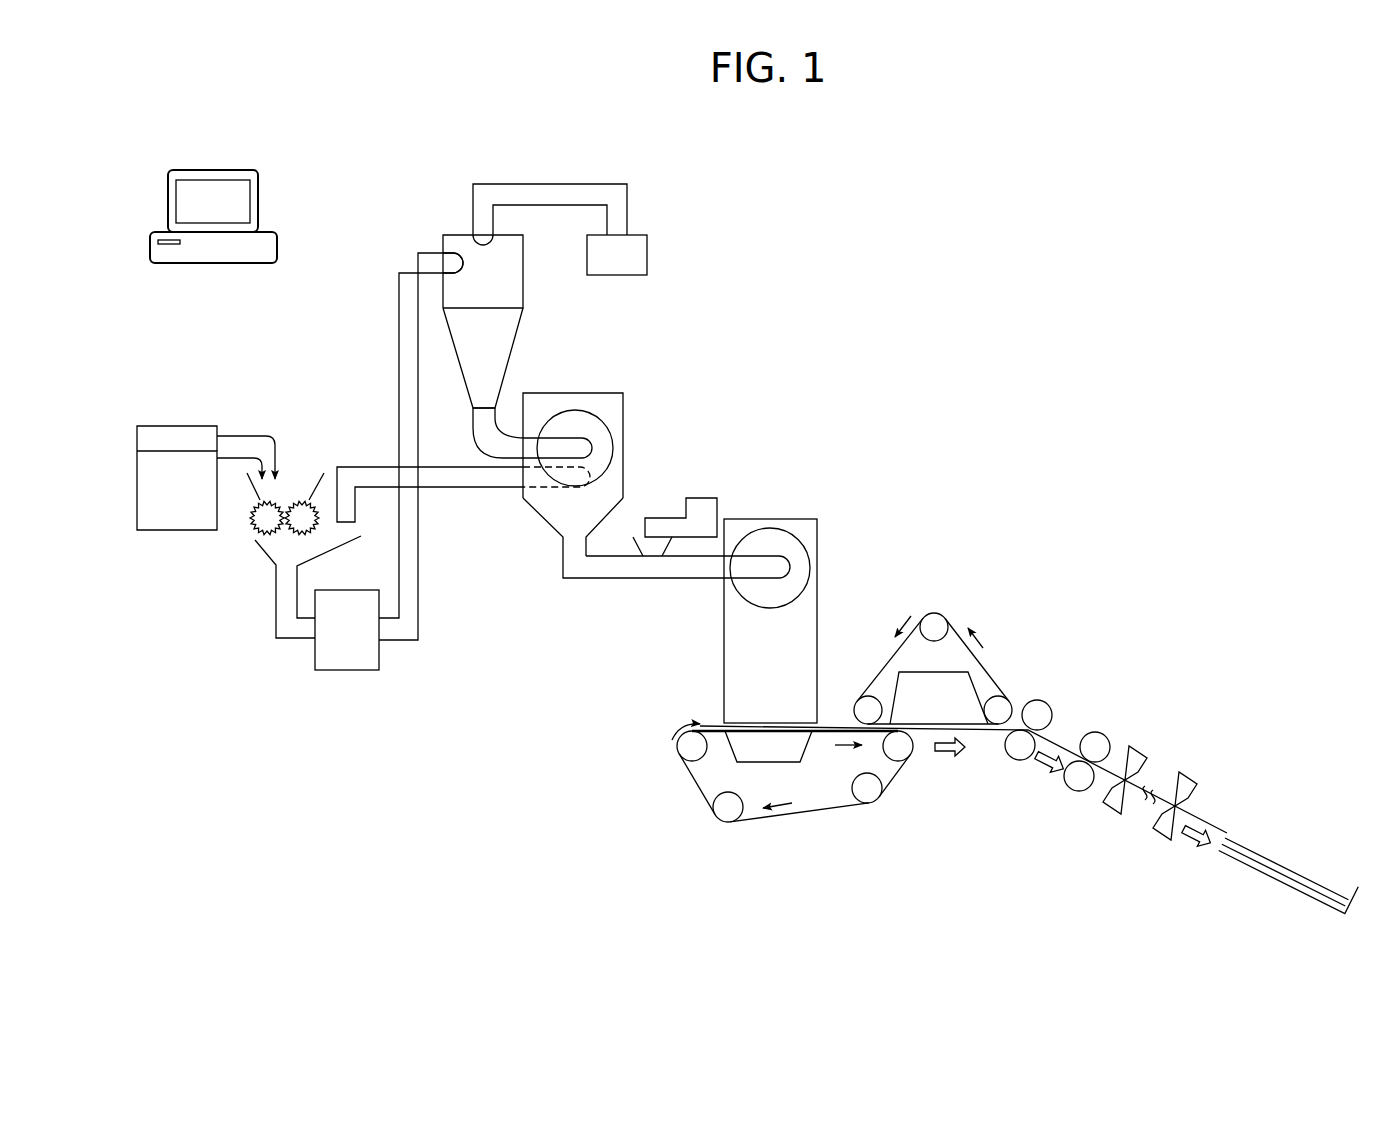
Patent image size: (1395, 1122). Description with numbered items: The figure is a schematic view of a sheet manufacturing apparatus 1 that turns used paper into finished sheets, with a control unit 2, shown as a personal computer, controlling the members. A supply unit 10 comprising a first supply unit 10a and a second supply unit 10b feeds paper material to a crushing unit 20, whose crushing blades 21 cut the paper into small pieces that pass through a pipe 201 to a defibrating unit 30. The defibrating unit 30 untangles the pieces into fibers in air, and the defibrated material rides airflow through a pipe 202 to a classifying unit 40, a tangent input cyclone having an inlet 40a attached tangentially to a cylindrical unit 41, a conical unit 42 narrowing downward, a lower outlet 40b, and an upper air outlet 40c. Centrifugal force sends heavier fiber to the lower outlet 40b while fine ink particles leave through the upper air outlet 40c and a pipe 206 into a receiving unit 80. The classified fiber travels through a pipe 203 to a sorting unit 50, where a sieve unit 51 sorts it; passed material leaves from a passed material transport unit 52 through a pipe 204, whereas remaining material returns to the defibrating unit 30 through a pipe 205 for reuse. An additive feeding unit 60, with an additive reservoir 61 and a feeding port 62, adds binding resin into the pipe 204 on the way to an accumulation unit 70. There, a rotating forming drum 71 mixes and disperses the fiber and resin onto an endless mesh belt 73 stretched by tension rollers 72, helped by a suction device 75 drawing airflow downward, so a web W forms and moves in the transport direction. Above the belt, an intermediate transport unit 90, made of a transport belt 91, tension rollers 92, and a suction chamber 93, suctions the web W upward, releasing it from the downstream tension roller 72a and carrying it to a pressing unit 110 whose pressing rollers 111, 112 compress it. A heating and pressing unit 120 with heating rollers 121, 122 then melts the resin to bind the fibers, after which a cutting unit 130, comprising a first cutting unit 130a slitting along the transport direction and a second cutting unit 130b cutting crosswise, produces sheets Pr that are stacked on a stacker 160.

The sheet manufacturing apparatus 1 is at (843, 209).
The control unit 2 is at (271, 171).
The supply unit 10 is at (206, 466).
The first supply unit 10a is at (176, 541).
The second supply unit 10b is at (207, 427).
The crushing unit 20 is at (276, 541).
The crushing blades 21 is at (263, 533).
The defibrating unit 30 is at (355, 588).
The classifying unit 40 is at (490, 296).
The inlet 40a is at (444, 263).
The lower outlet 40b is at (490, 410).
The upper air outlet 40c is at (477, 240).
The cylindrical unit 41 is at (517, 281).
The conical unit 42 is at (467, 386).
The sorting unit 50 is at (563, 473).
The sieve unit 51 is at (589, 413).
The passed material transport unit 52 is at (554, 523).
The additive feeding unit 60 is at (675, 488).
The additive reservoir 61 is at (703, 499).
The feeding port 62 is at (640, 538).
The accumulation unit 70 is at (793, 590).
The forming drum 71 is at (768, 547).
The tension rollers 72 is at (771, 803).
The tension roller 72a is at (883, 748).
The mesh belt 73 is at (771, 806).
The suction device 75 is at (747, 756).
The receiving unit 80 is at (657, 222).
The intermediate transport unit 90 is at (948, 640).
The transport belt 91 is at (984, 661).
The tension rollers 92 is at (927, 613).
The suction chamber 93 is at (900, 674).
The pressing unit 110 is at (1044, 701).
The pressing roller 111 is at (1049, 706).
The pressing roller 112 is at (1012, 759).
The heating and pressing unit 120 is at (1103, 727).
The heating roller 121 is at (1099, 739).
The heating roller 122 is at (1070, 793).
The cutting unit 130 is at (1191, 747).
The first cutting unit 130a is at (1149, 742).
The second cutting unit 130b is at (1213, 775).
The stacker 160 is at (1249, 871).
The pipe 201 is at (273, 631).
The pipe 202 is at (397, 292).
The pipe 203 is at (507, 460).
The pipe 204 is at (578, 583).
The pipe 205 is at (460, 489).
The pipe 206 is at (558, 193).
The web W is at (826, 723).
The sheet Pr is at (1207, 823).